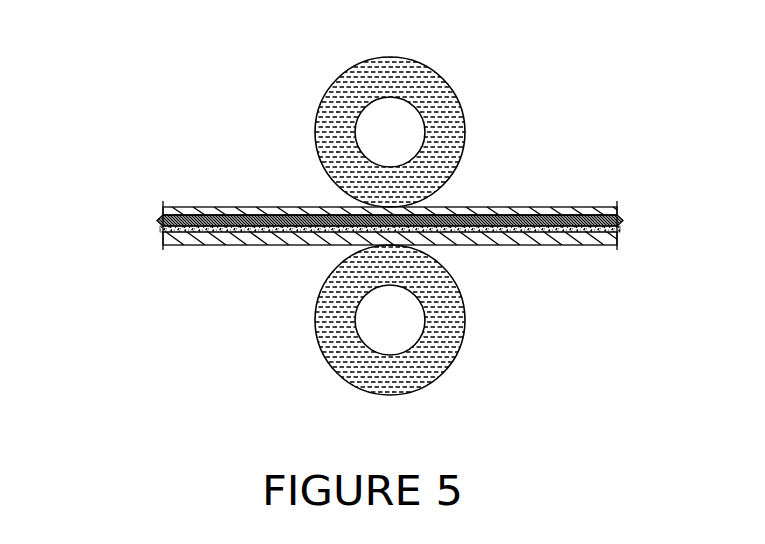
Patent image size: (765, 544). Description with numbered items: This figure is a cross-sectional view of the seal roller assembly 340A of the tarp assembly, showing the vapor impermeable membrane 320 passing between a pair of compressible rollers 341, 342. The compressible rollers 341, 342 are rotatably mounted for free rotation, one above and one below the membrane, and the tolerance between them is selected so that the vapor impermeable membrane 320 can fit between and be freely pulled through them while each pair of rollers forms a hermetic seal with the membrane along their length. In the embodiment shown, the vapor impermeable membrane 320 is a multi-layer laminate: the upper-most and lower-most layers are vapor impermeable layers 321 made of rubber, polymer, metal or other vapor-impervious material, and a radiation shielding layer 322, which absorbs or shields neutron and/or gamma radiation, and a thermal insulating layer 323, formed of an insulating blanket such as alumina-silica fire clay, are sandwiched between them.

The vapor impermeable membrane 320 is at (510, 191).
The vapor impermeable layer 321 is at (296, 200).
The radiation shielding layer 322 is at (276, 209).
The thermal insulating layer 323 is at (244, 215).
The seal roller assembly 340A is at (510, 56).
The compressible roller 341 is at (452, 122).
The compressible roller 342 is at (455, 316).